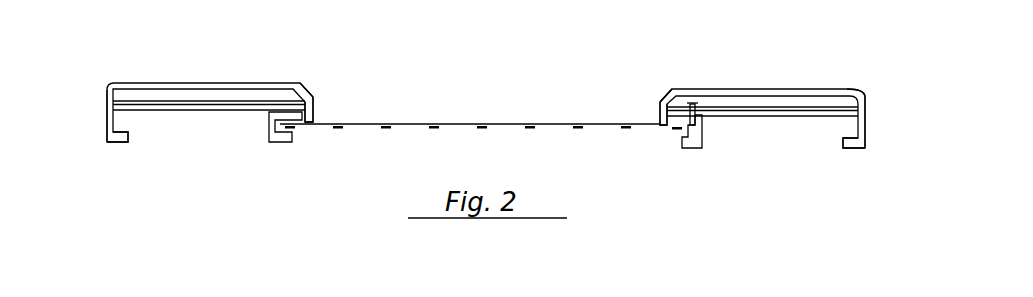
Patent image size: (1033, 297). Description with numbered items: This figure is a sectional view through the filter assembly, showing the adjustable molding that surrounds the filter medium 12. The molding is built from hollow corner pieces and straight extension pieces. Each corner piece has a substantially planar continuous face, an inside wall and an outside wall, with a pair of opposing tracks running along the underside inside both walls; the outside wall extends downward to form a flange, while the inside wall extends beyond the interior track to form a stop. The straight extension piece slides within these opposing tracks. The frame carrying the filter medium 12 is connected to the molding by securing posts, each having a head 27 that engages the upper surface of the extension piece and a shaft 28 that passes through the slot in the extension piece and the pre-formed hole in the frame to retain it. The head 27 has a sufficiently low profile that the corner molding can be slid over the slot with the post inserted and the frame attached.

The filter medium 12 is at (452, 123).
The head 27 is at (692, 100).
The shaft 28 is at (690, 125).